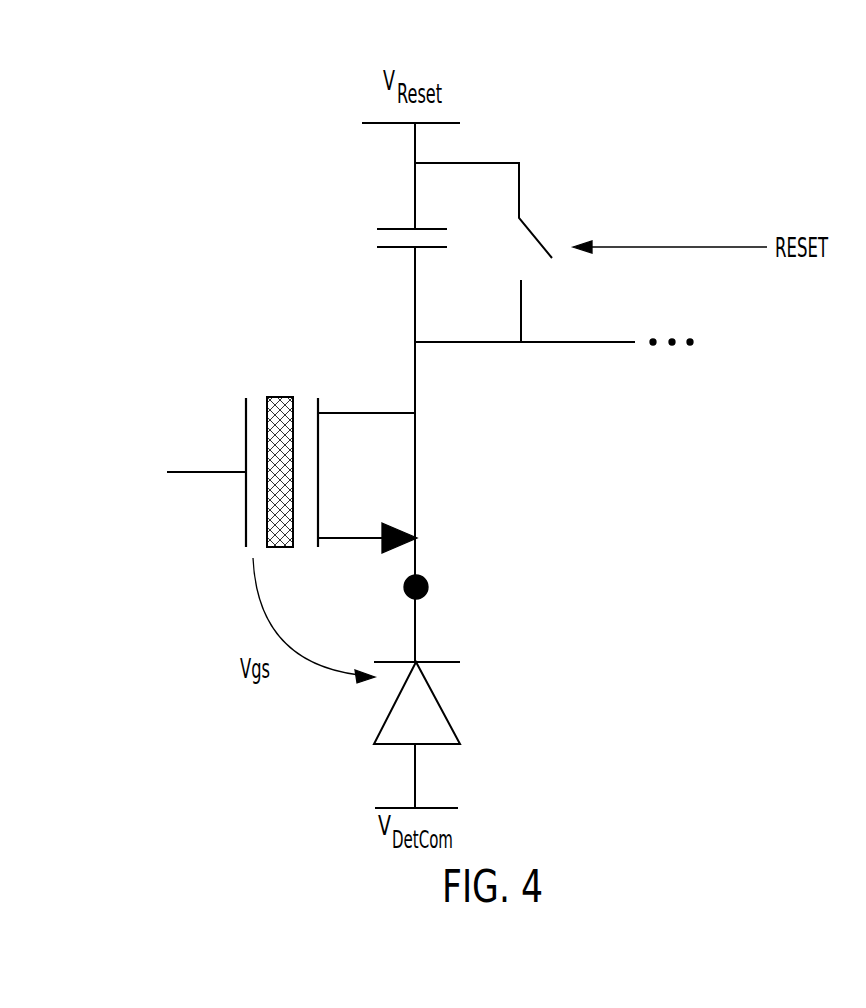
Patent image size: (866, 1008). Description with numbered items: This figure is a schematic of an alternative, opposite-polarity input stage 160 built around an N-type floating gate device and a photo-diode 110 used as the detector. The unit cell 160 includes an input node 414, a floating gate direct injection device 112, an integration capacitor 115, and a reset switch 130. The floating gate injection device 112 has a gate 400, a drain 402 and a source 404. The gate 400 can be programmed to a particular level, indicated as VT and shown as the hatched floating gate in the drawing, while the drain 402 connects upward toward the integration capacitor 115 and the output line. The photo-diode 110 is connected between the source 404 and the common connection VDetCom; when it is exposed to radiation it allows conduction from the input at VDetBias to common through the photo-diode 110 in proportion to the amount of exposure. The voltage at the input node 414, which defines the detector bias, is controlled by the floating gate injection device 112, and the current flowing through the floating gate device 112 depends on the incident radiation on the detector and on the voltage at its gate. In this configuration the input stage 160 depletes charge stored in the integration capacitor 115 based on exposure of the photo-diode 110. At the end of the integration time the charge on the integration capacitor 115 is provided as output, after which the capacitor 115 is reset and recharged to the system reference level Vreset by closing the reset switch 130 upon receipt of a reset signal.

The input stage 160 is at (687, 113).
The integration capacitor 115 is at (393, 225).
The reset switch 130 is at (537, 238).
The drain 402 is at (393, 408).
The floating gate direct injection device 112 is at (225, 398).
The gate 400 is at (192, 473).
The source 404 is at (392, 552).
The input node 414 is at (421, 574).
The photo-diode 110 is at (443, 703).